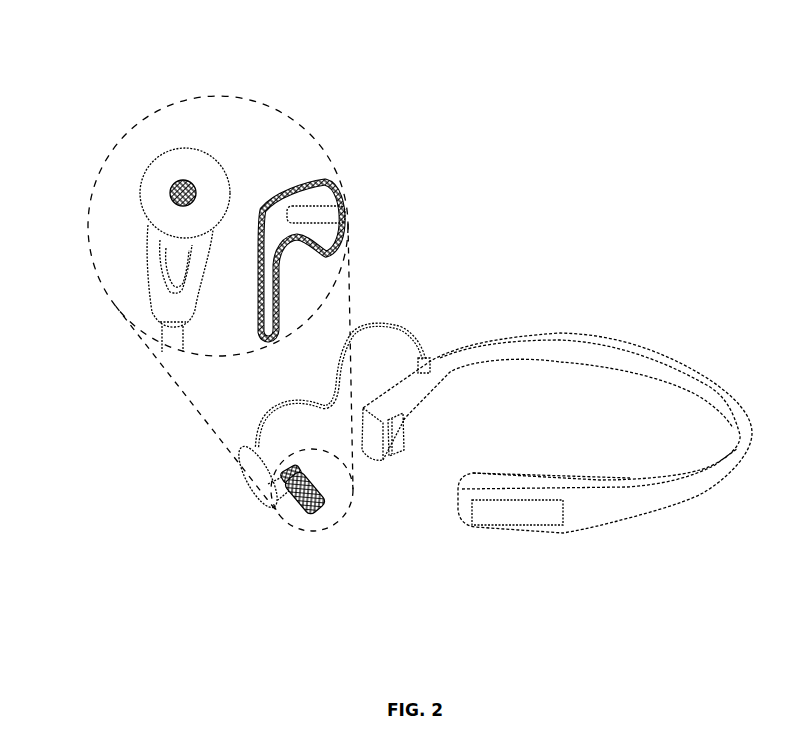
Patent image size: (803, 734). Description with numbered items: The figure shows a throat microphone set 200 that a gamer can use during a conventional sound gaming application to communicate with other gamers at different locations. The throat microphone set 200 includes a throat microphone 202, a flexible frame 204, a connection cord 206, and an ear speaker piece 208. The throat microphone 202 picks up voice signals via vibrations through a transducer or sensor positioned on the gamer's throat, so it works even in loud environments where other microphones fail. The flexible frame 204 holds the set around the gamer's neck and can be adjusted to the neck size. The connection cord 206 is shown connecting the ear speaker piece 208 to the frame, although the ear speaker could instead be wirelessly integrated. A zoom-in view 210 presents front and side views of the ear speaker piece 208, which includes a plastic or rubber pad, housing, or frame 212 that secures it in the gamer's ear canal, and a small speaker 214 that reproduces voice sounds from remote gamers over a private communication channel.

The throat microphone set 200 is at (67, 134).
The throat microphone 202 is at (402, 433).
The flexible frame 204 is at (609, 350).
The connection cord 206 is at (402, 332).
The ear speaker piece 208 is at (262, 505).
The zoom-in view 210 is at (248, 96).
The pad, housing, or frame 212 is at (175, 167).
The speaker 214 is at (178, 205).